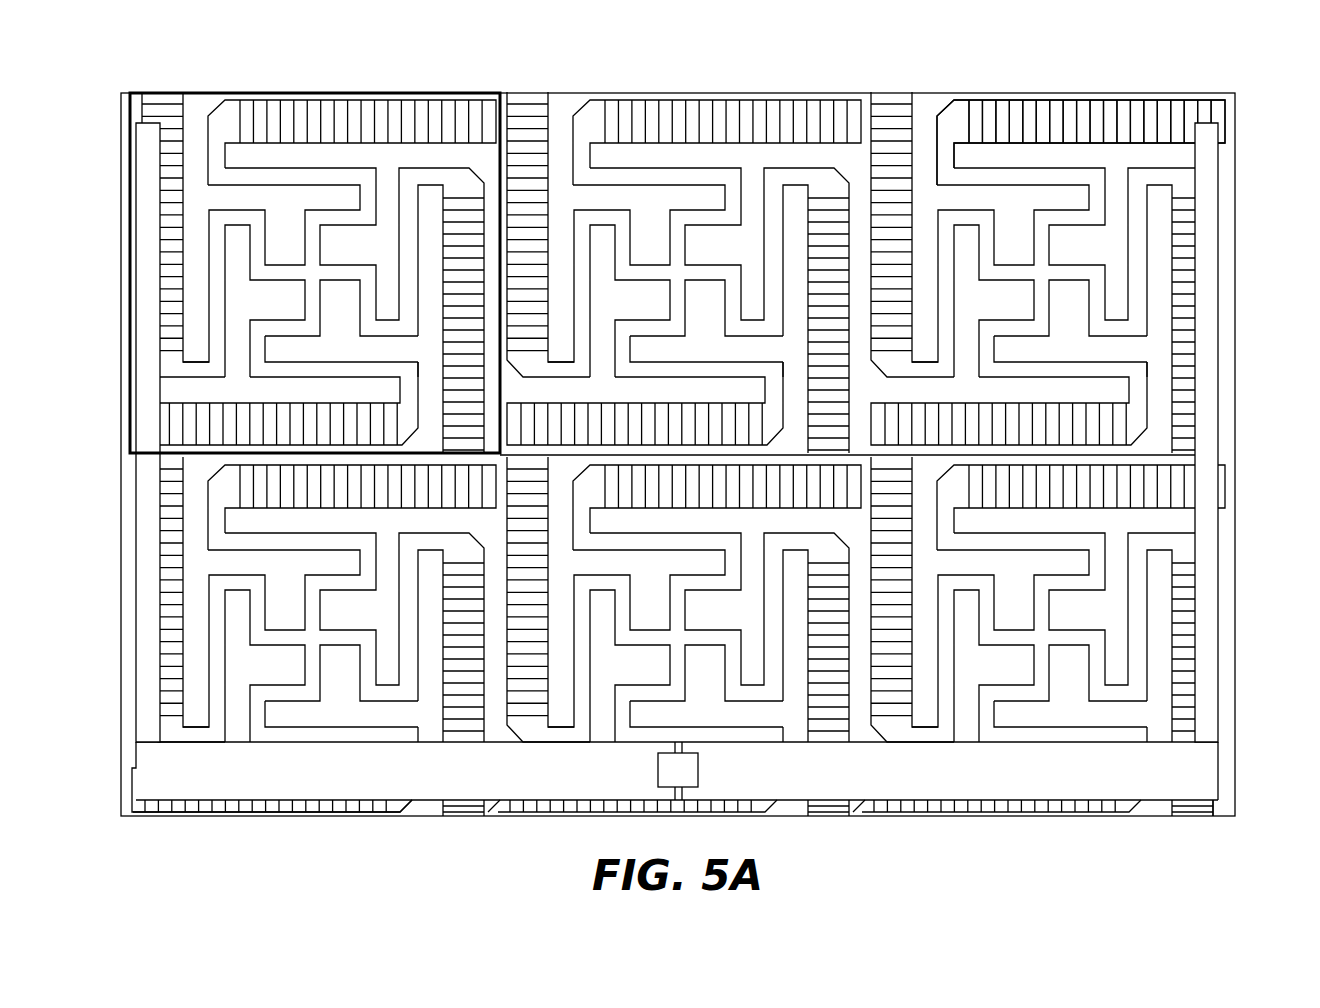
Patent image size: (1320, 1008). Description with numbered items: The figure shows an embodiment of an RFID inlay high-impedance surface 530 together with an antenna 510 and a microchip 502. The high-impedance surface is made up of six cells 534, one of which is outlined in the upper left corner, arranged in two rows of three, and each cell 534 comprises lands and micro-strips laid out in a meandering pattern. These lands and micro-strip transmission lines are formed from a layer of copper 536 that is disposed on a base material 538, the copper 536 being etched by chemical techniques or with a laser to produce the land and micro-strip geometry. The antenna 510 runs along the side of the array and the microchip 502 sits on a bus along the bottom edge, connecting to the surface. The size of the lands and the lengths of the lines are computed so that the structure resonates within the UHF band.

The RFID inlay high-impedance surface 530 is at (212, 62).
The cell 534 is at (130, 382).
The layer of copper 536 is at (1110, 117).
The base material 538 is at (1235, 237).
The antenna 510 is at (147, 550).
The microchip 502 is at (672, 770).